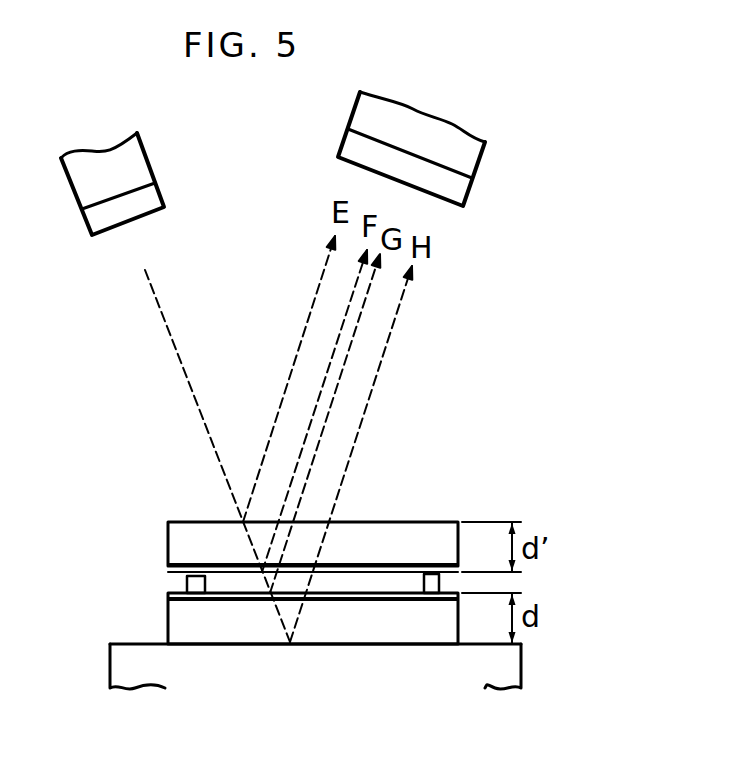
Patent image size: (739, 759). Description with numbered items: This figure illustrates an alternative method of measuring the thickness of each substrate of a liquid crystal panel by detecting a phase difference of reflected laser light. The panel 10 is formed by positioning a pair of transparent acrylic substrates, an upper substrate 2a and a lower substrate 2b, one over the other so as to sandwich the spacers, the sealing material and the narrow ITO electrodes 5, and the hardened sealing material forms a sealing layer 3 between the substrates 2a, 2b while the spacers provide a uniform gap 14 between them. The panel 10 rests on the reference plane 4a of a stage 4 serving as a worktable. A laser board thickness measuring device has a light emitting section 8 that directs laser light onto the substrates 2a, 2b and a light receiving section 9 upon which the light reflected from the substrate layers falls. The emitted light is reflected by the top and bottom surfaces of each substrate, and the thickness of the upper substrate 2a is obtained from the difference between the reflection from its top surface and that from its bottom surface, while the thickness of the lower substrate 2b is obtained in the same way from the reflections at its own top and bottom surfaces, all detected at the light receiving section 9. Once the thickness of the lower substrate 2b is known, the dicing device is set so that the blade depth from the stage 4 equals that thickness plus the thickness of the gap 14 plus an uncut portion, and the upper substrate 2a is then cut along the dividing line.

The upper transparent substrate 2a is at (180, 543).
The lower transparent substrate 2b is at (187, 622).
The sealing layer 3 is at (187, 583).
The stage 4 is at (516, 667).
The reference plane 4a is at (123, 644).
The ITO electrode 5 is at (243, 596).
The light emitting section 8 is at (138, 169).
The light receiving section 9 is at (360, 120).
The panel 10 is at (150, 506).
The gap 14 is at (413, 577).